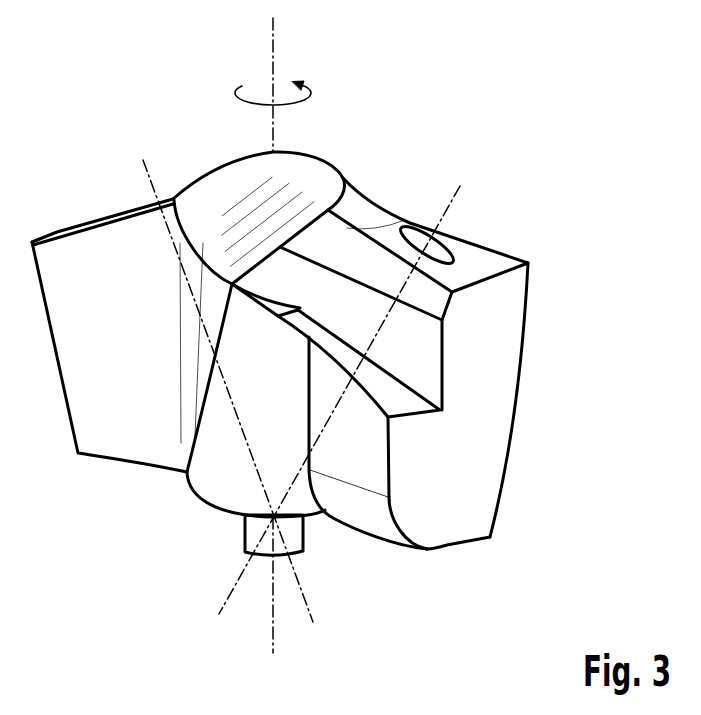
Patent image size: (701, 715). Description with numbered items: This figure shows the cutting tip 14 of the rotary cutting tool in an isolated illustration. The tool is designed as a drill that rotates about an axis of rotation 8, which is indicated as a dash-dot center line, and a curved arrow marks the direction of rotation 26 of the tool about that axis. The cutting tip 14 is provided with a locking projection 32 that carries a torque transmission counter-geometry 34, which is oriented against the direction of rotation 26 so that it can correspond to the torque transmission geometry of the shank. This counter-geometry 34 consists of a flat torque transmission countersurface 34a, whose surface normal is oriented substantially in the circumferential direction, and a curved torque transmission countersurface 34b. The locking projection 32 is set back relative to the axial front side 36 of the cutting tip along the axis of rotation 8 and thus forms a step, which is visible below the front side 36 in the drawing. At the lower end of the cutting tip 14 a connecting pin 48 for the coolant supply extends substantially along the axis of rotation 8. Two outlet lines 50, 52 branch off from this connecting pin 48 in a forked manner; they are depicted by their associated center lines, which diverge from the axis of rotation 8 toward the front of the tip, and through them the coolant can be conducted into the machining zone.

The axis of rotation 8 is at (273, 29).
The cutting tip 14 is at (510, 363).
The direction of rotation 26 is at (305, 88).
The locking projection 32 is at (410, 530).
The torque transmission counter-geometry 34 is at (447, 469).
The flat torque transmission countersurface 34a is at (378, 455).
The curved torque transmission countersurface 34b is at (408, 548).
The axial front side 36 is at (502, 259).
The connecting pin 48 is at (247, 530).
The outlet line 50 is at (143, 163).
The outlet line 52 is at (458, 194).